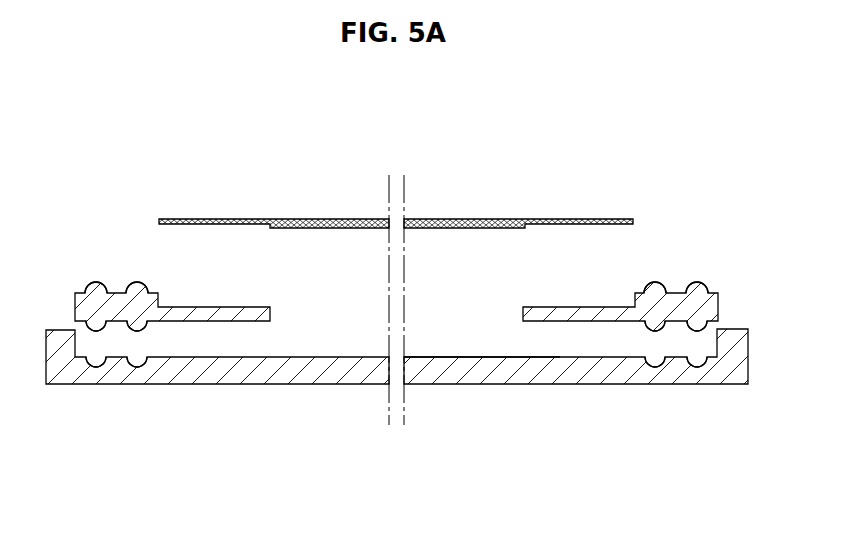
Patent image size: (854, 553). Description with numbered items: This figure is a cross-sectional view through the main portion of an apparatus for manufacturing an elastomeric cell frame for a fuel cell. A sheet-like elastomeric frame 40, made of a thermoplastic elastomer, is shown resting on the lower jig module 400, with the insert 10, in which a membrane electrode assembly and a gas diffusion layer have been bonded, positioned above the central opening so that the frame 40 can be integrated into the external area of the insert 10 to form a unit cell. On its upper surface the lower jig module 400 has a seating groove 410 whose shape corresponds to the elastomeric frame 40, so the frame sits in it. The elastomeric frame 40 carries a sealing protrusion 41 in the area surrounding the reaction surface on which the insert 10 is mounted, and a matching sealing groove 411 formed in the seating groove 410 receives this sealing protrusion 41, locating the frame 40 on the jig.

The insert 10 is at (562, 219).
The elastomeric frame 40 is at (208, 312).
The sealing protrusion 41 is at (137, 282).
The lower jig module 400 is at (254, 370).
The seating groove 410 is at (445, 340).
The sealing groove 411 is at (137, 368).